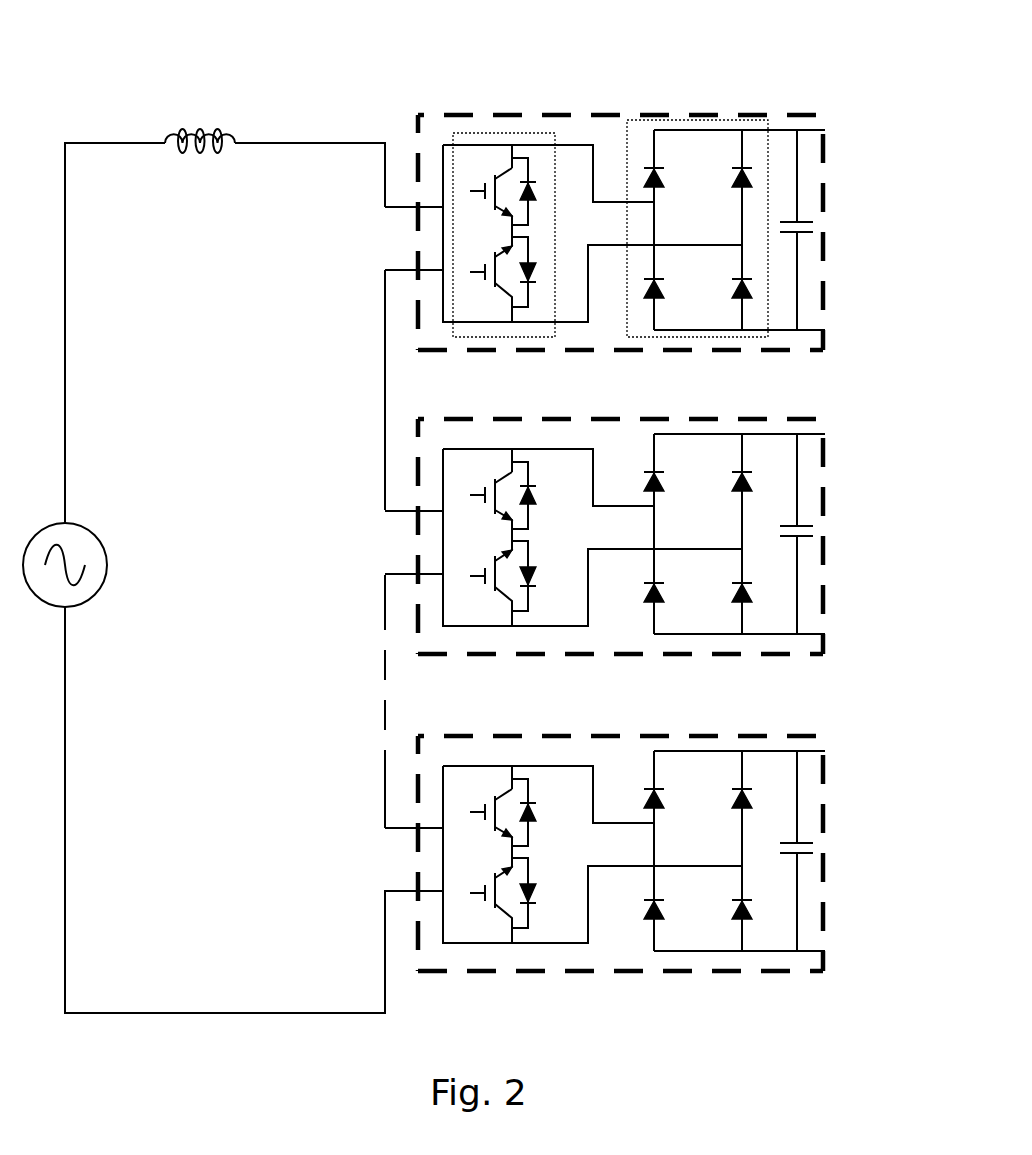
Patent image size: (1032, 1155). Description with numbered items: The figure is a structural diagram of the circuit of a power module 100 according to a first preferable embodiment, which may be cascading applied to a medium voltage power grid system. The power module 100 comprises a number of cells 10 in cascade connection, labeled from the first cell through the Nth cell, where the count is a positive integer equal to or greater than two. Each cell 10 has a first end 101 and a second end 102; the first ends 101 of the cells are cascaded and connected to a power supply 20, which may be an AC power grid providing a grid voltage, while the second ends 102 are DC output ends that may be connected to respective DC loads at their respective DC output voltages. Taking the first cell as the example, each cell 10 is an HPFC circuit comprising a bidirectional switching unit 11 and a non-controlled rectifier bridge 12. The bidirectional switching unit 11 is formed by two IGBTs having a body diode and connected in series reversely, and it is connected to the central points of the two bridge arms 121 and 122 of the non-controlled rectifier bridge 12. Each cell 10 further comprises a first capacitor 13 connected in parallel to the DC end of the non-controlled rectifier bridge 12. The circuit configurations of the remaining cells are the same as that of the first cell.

The power module 100 is at (182, 34).
The cell 10 is at (806, 114).
The bidirectional switching unit 11 is at (490, 128).
The non-controlled rectifier bridge 12 is at (734, 184).
The bridge arm 121 is at (652, 152).
The bridge arm 122 is at (744, 151).
The first capacitor 13 is at (806, 218).
The first end 101 is at (405, 235).
The second end 102 is at (838, 254).
The power supply 20 is at (90, 520).